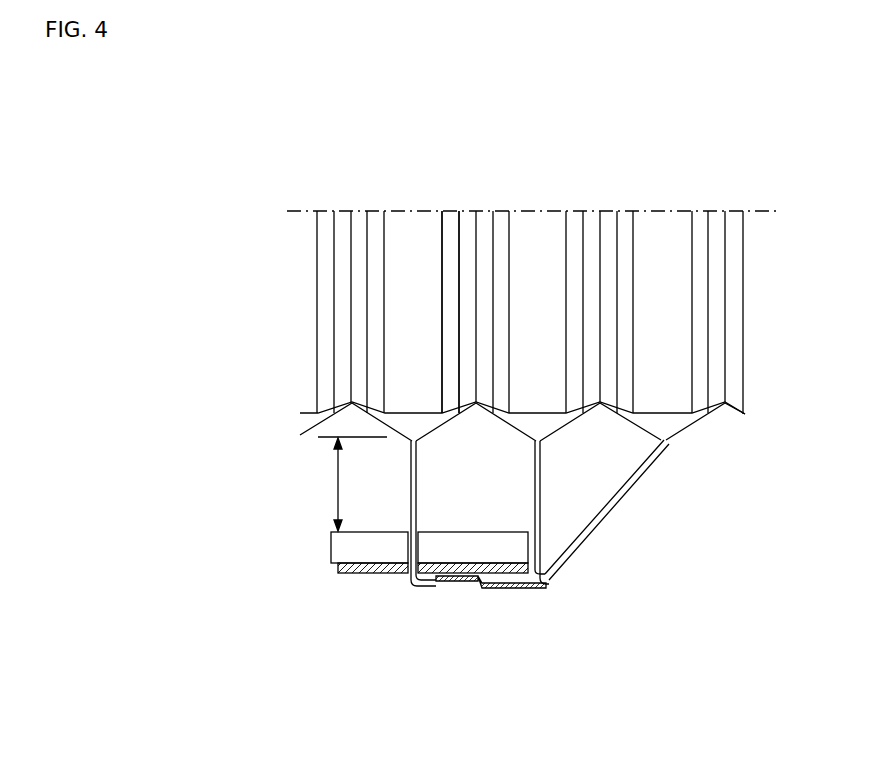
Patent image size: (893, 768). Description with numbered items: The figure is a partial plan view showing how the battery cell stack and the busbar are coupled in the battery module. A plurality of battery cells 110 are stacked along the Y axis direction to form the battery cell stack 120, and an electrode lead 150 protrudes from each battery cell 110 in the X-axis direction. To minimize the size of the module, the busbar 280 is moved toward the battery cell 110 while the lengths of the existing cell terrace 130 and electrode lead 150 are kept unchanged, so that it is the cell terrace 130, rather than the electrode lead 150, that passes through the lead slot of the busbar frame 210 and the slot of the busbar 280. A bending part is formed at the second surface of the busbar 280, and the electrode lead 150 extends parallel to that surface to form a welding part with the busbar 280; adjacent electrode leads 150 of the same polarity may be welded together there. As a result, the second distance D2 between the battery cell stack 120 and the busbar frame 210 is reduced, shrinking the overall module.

The battery cell 110 is at (545, 232).
The battery cell stack 120 is at (307, 292).
The cell terrace 130 is at (413, 512).
The electrode lead 150 is at (447, 583).
The busbar frame 210 is at (507, 555).
The busbar 280 is at (382, 578).
The second distance D2 is at (346, 484).